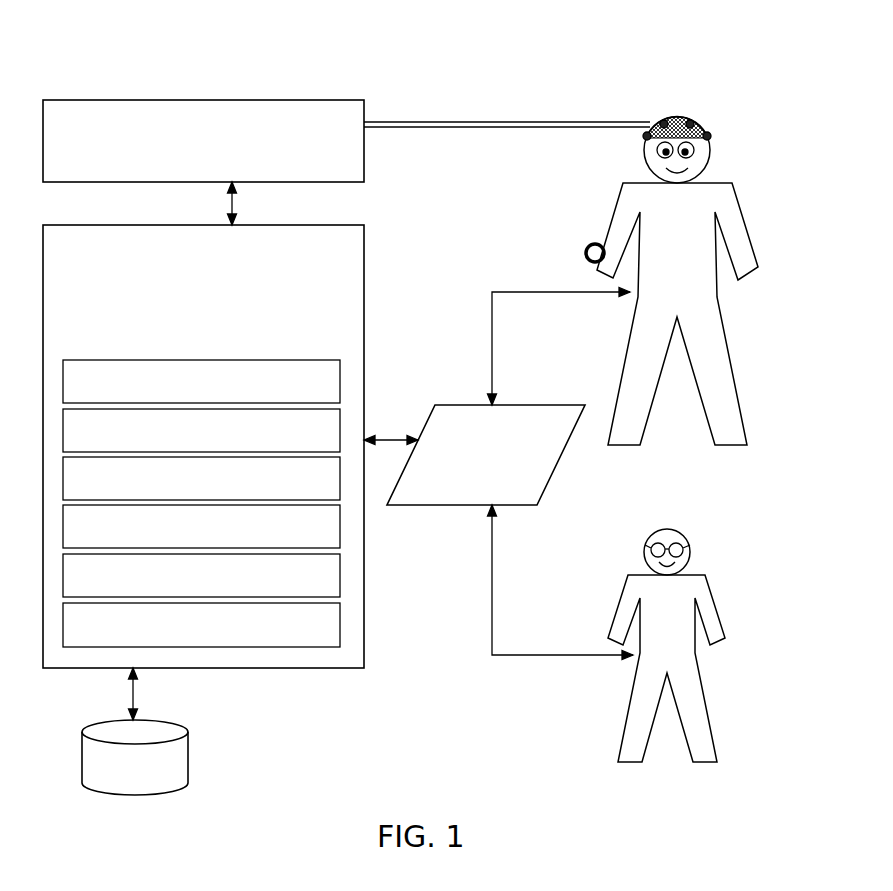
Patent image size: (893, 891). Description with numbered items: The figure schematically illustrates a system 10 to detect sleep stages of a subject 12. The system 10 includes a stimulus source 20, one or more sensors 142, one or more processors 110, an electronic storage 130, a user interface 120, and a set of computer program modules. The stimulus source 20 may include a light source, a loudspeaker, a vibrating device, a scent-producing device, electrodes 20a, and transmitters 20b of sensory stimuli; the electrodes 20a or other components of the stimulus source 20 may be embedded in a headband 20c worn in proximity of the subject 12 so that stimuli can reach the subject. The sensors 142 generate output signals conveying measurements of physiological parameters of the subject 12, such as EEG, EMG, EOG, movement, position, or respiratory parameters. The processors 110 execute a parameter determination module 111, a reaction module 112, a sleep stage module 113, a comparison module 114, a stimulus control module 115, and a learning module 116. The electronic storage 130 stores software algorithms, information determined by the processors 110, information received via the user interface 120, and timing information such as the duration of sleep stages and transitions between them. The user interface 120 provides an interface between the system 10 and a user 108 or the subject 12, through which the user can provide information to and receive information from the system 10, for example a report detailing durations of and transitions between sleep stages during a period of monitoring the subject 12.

The system 10 is at (330, 762).
The subject 12 is at (742, 252).
The stimulus source 20 is at (203, 141).
The electrodes 20a is at (672, 117).
The transmitters of sensory stimuli 20b is at (560, 120).
The headband 20c is at (701, 122).
The user 108 is at (704, 594).
The processor 110 is at (203, 446).
The parameter determination module 111 is at (201, 625).
The reaction module 112 is at (201, 575).
The sleep stage module 113 is at (201, 526).
The comparison module 114 is at (201, 478).
The stimulus control module 115 is at (201, 430).
The learning module 116 is at (201, 381).
The user interface 120 is at (486, 455).
The electronic storage 130 is at (146, 722).
The sensors 142 is at (584, 254).